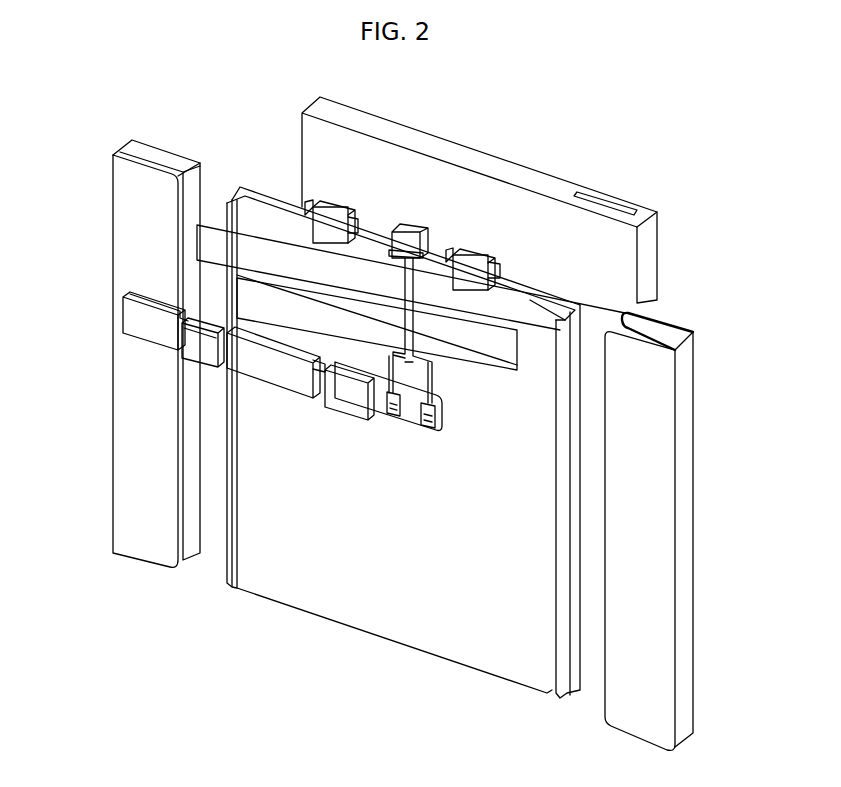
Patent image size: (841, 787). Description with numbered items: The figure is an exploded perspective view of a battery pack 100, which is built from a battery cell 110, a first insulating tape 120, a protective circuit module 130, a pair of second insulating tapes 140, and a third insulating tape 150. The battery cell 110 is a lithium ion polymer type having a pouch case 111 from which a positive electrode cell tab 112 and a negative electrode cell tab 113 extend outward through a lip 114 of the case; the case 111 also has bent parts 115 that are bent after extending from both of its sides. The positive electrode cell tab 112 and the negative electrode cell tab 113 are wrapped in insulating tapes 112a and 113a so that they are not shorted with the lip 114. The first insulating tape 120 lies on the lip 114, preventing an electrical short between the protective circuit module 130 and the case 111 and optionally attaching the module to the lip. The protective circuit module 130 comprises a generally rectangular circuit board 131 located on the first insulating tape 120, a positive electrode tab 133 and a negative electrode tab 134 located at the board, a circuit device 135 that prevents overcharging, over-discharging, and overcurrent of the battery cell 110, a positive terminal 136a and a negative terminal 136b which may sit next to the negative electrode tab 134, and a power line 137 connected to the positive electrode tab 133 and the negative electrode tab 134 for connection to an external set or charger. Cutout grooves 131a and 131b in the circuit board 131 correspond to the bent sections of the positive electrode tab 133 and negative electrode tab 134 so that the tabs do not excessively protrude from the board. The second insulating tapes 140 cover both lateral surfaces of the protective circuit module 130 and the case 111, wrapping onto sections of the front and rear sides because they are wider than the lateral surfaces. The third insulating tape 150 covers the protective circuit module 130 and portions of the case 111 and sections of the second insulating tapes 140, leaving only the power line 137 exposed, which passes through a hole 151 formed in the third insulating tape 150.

The battery pack 100 is at (703, 196).
The battery cell 110 is at (411, 651).
The pouch case 111 is at (337, 608).
The positive electrode cell tab 112 is at (322, 203).
The insulating tape 112a is at (352, 217).
The negative electrode cell tab 113 is at (460, 247).
The insulating tape 113a is at (497, 263).
The lip 114 is at (276, 208).
The bent parts 115 is at (223, 217).
The first insulating tape 120 is at (205, 233).
The protective circuit module 130 is at (370, 418).
The circuit board 131 is at (442, 415).
The cutout groove 131a is at (187, 313).
The cutout groove 131b is at (342, 367).
The positive electrode tab 133 is at (197, 348).
The negative electrode tab 134 is at (333, 396).
The circuit device 135 is at (130, 317).
The positive terminal 136a is at (400, 421).
The negative terminal 136b is at (435, 435).
The power line 137 is at (398, 379).
The second insulating tapes 140 is at (118, 197).
The third insulating tape 150 is at (442, 141).
The hole 151 is at (608, 203).